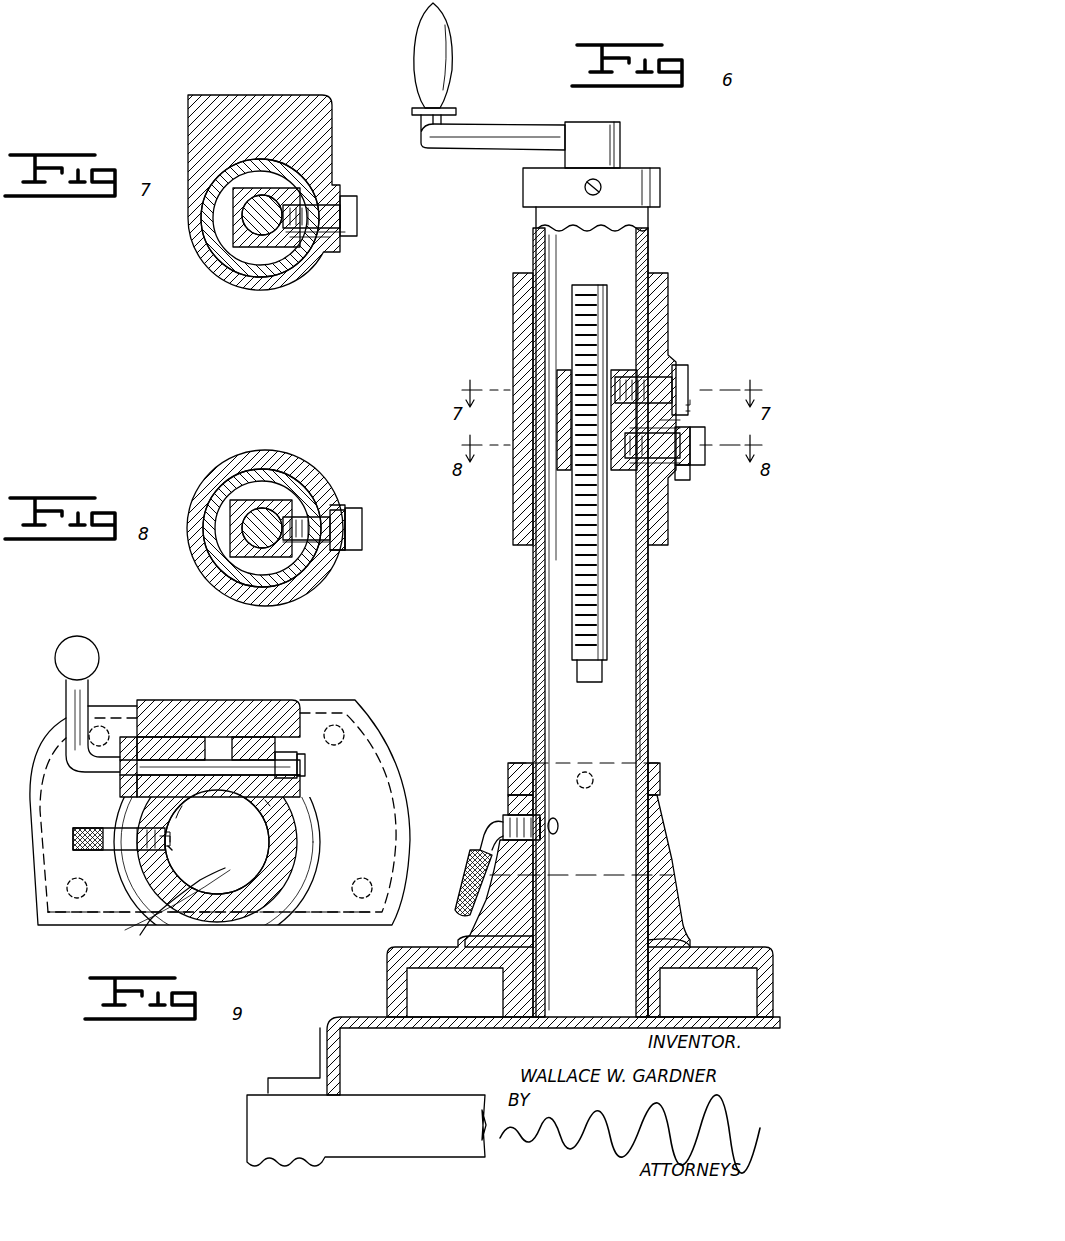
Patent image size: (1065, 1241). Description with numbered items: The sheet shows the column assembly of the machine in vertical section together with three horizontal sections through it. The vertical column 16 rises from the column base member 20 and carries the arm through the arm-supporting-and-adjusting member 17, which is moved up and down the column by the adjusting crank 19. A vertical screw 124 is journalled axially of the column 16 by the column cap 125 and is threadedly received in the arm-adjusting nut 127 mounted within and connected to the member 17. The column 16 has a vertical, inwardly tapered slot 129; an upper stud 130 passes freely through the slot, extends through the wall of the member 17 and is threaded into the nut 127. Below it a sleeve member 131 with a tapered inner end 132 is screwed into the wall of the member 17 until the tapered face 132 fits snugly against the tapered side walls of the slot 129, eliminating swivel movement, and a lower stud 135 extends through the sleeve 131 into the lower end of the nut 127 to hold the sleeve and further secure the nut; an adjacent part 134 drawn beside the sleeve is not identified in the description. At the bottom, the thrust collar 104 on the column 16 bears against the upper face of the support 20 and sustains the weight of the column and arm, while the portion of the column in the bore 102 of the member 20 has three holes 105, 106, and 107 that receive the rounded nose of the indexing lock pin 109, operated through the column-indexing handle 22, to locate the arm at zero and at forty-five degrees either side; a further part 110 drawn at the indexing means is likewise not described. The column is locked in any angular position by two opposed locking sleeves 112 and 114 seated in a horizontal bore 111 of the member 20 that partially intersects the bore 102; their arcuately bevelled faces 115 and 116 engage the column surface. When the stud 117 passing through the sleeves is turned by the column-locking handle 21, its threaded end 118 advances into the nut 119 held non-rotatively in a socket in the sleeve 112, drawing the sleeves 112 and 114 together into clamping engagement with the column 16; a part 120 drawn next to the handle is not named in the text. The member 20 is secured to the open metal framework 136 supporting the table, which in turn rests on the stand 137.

In FIG. 6, the vertical column 16 is at (642, 735).
In FIG. 7, the vertical column 16 is at (278, 282).
In FIG. 8, the vertical column 16 is at (276, 466).
In FIG. 9, the vertical column 16 is at (300, 850).
In FIG. 6, the arm-supporting-and-adjusting member 17 is at (668, 322).
In FIG. 7, the arm-supporting-and-adjusting member 17 is at (318, 160).
In FIG. 8, the arm-supporting-and-adjusting member 17 is at (305, 482).
In FIG. 6, the adjusting crank 19 is at (506, 128).
In FIG. 6, the column base member 20 is at (680, 925).
In FIG. 9, the column base member 20 is at (325, 805).
In FIG. 9, the column-locking handle 21 is at (95, 704).
In FIG. 6, the column-indexing handle 22 is at (490, 830).
In FIG. 9, the column-indexing handle 22 is at (115, 828).
In FIG. 6, the bore 102 is at (668, 845).
In FIG. 9, the bore 102 is at (150, 925).
In FIG. 6, the thrust collar 104 is at (660, 769).
In FIG. 6, the hole 105 is at (541, 842).
In FIG. 9, the hole 105 is at (172, 848).
In FIG. 9, the hole 106 is at (178, 870).
In FIG. 6, the hole 107 is at (558, 832).
In FIG. 9, the hole 107 is at (172, 826).
In FIG. 6, the indexing lock pin 109 is at (548, 820).
In FIG. 9, the indexing lock pin 109 is at (172, 836).
In FIG. 6, the handle 110 is at (496, 852).
In FIG. 9, the handle 110 is at (125, 878).
In FIG. 9, the horizontal bore 111 is at (290, 740).
In FIG. 9, the locking sleeve 112 is at (248, 735).
In FIG. 9, the locking sleeve 114 is at (190, 725).
In FIG. 9, the arcuately bevelled face 115 is at (265, 800).
In FIG. 9, the arcuately bevelled face 116 is at (188, 806).
In FIG. 9, the stud 117 is at (215, 760).
In FIG. 9, the threaded end 118 is at (300, 756).
In FIG. 9, the nut 119 is at (305, 766).
In FIG. 9, the arm 120 is at (125, 770).
In FIG. 6, the vertical screw 124 is at (612, 345).
In FIG. 7, the vertical screw 124 is at (247, 270).
In FIG. 8, the vertical screw 124 is at (260, 560).
In FIG. 6, the column cap 125 is at (660, 170).
In FIG. 6, the arm-adjusting nut 127 is at (560, 452).
In FIG. 7, the arm-adjusting nut 127 is at (258, 248).
In FIG. 8, the arm-adjusting nut 127 is at (232, 556).
In FIG. 6, the slot 129 is at (642, 642).
In FIG. 7, the slot 129 is at (310, 245).
In FIG. 8, the slot 129 is at (328, 502).
In FIG. 6, the upper stud 130 is at (662, 378).
In FIG. 7, the upper stud 130 is at (333, 215).
In FIG. 6, the sleeve member 131 is at (678, 428).
In FIG. 6, the tapered inner end 132 is at (640, 470).
In FIG. 8, the tapered inner end 132 is at (318, 550).
In FIG. 6, the nut 134 is at (660, 478).
In FIG. 8, the nut 134 is at (338, 552).
In FIG. 6, the lower stud 135 is at (695, 468).
In FIG. 8, the lower stud 135 is at (290, 578).
In FIG. 6, the open metal framework 136 is at (348, 1016).
In FIG. 6, the stand 137 is at (365, 1142).